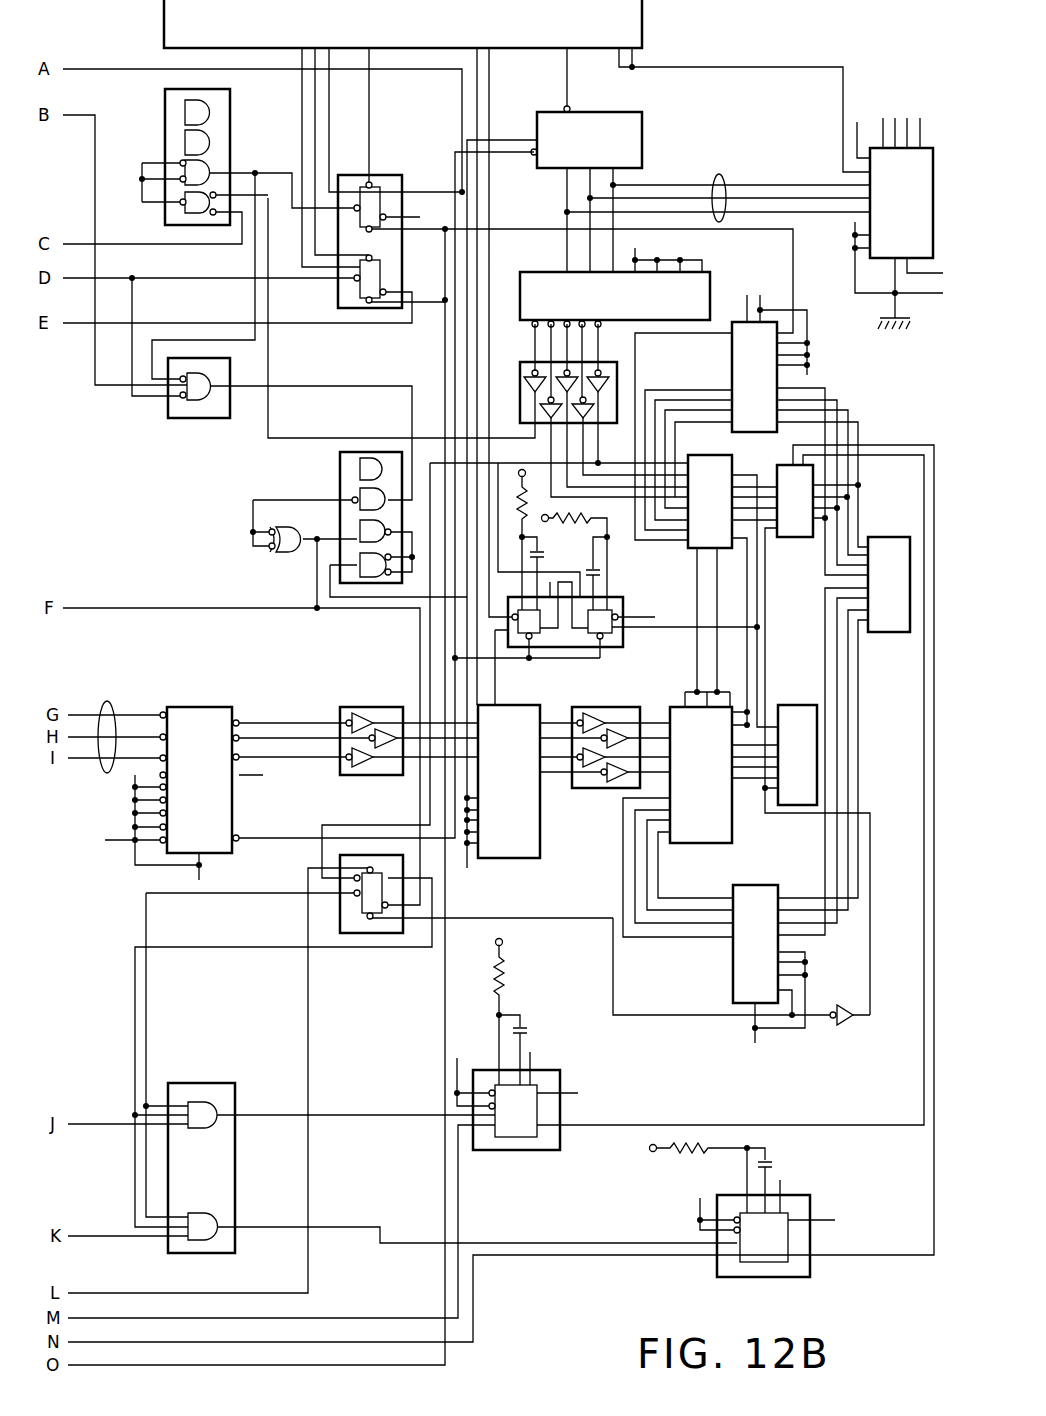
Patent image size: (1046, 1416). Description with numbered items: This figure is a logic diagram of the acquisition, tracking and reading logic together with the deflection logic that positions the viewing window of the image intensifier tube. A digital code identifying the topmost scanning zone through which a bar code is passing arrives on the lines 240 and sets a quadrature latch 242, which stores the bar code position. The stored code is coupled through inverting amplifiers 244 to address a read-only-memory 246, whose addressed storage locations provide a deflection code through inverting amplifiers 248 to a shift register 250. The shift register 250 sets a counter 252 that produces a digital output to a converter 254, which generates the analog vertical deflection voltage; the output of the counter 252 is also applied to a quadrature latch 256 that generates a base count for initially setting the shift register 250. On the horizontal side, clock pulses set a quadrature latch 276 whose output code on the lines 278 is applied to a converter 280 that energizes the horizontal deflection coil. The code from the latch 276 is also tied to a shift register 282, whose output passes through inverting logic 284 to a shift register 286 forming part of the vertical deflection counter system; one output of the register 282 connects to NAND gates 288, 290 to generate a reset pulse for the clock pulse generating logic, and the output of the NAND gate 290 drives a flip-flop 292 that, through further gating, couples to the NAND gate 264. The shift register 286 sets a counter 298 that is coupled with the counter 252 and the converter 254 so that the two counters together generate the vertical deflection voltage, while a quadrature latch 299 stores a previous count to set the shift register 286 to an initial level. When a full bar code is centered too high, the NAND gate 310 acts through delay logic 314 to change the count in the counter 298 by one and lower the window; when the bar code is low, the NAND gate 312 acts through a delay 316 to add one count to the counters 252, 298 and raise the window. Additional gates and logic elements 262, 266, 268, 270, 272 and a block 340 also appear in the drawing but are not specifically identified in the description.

The lines 240 is at (108, 705).
The quadrature latch 242 is at (220, 771).
The inverting amplifiers 244 is at (386, 707).
The read-only-memory 246 is at (531, 768).
The inverting amplifiers 248 is at (615, 707).
The shift register 250 is at (723, 768).
The counter 252 is at (800, 714).
The converter 254 is at (897, 546).
The quadrature latch 256 is at (765, 894).
The flip-flop 262 is at (355, 298).
The NAND gate 264 is at (200, 400).
The NAND gate 266 is at (356, 494).
The exclusive OR gate 268 is at (286, 550).
The NAND gate 270 is at (358, 528).
The NAND gate 272 is at (368, 580).
The quadrature latch 276 is at (614, 145).
The lines 278 is at (723, 176).
The converter 280 is at (924, 208).
The shift register 282 is at (628, 305).
The inverting logic 284 is at (618, 366).
The shift register 286 is at (722, 468).
The NAND gate 288 is at (190, 210).
The NAND gate 290 is at (790, 476).
The flip-flop 292 is at (372, 190).
The counter 298 is at (212, 166).
The quadrature latch 299 is at (732, 362).
The NAND gate 310 is at (211, 1216).
The NAND gate 312 is at (207, 1124).
The delay logic 314 is at (773, 1241).
The delay 316 is at (511, 1135).
The microprocessor 340 is at (417, 27).